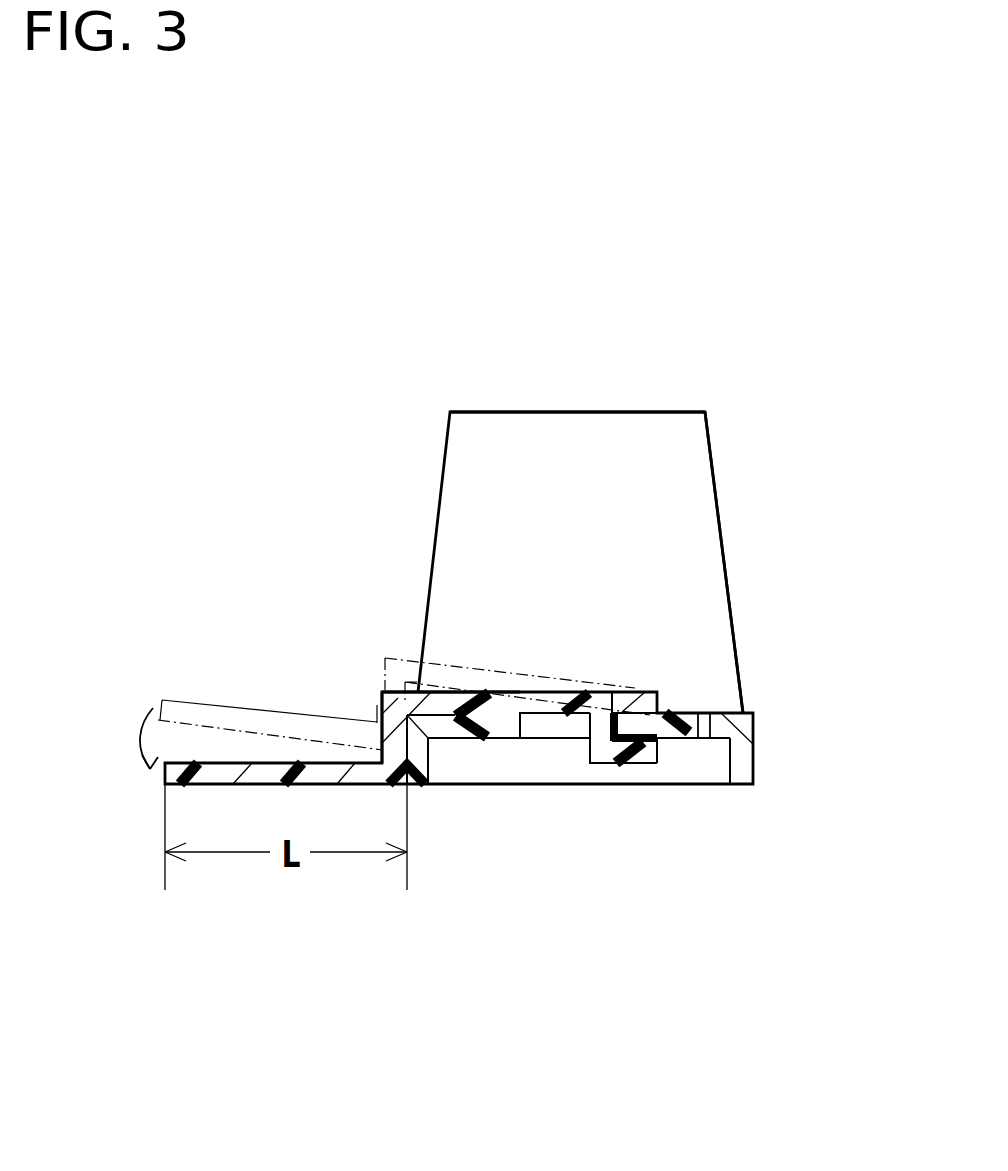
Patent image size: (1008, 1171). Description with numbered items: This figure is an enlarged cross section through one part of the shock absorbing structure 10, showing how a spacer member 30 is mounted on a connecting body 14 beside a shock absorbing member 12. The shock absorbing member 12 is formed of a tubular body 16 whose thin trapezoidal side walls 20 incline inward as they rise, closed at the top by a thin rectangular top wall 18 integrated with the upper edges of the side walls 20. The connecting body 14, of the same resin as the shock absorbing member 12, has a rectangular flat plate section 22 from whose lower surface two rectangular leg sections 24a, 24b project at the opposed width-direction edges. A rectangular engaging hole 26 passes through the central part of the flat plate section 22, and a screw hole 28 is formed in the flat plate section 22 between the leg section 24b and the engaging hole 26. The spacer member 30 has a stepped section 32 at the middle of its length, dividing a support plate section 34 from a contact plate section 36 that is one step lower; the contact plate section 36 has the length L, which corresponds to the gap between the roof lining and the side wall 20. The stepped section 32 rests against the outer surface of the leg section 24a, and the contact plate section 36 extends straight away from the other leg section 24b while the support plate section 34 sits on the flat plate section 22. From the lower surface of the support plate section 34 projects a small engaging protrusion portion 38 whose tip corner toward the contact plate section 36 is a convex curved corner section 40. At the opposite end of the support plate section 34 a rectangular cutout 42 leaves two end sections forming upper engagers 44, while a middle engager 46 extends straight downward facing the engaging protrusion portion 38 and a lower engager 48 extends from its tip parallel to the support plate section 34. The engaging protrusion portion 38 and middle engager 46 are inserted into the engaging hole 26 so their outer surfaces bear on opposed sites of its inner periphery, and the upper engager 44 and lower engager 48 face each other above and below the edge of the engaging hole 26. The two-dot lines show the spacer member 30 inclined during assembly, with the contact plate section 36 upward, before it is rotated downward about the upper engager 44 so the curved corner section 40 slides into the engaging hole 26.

The shock absorbing structure 10 is at (535, 359).
The shock absorbing member 12 is at (758, 303).
The connecting body 14 is at (756, 735).
The tubular body 16 is at (628, 492).
The top wall 18 is at (587, 412).
The side wall 20 is at (758, 507).
The flat plate section 22 is at (450, 737).
The leg section 24a is at (420, 758).
The leg section 24b is at (744, 768).
The engaging hole 26 is at (490, 733).
The screw hole 28 is at (703, 730).
The spacer member 30 is at (375, 705).
The stepped section 32 is at (380, 747).
The support plate section 34 is at (441, 703).
The contact plate section 36 is at (258, 775).
The engaging protrusion portion 38 is at (510, 738).
The curved corner section 40 is at (494, 738).
The cutout 42 is at (623, 693).
The upper engager 44 is at (645, 694).
The middle engager 46 is at (588, 742).
The lower engager 48 is at (643, 748).